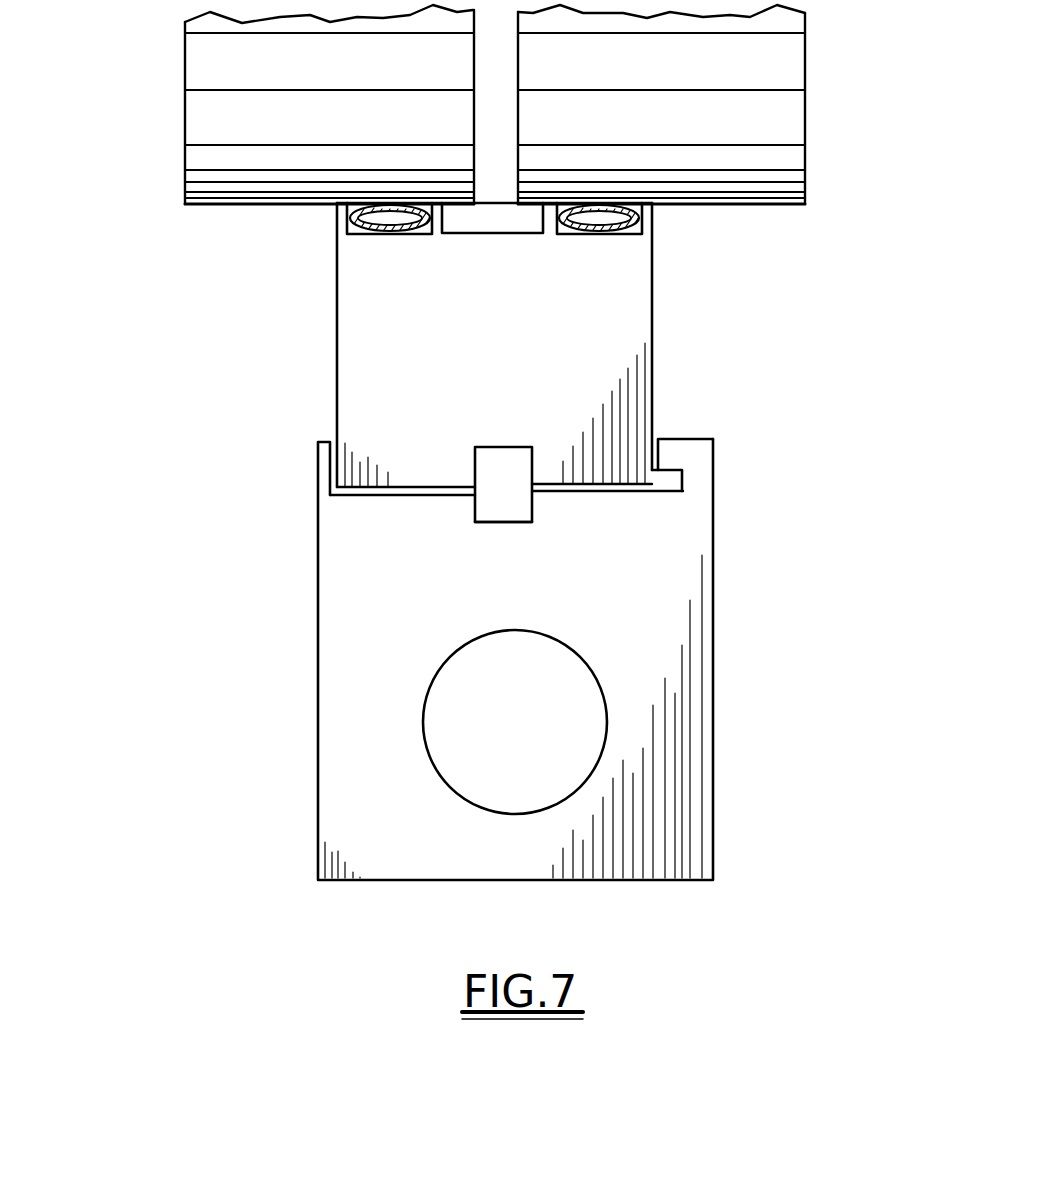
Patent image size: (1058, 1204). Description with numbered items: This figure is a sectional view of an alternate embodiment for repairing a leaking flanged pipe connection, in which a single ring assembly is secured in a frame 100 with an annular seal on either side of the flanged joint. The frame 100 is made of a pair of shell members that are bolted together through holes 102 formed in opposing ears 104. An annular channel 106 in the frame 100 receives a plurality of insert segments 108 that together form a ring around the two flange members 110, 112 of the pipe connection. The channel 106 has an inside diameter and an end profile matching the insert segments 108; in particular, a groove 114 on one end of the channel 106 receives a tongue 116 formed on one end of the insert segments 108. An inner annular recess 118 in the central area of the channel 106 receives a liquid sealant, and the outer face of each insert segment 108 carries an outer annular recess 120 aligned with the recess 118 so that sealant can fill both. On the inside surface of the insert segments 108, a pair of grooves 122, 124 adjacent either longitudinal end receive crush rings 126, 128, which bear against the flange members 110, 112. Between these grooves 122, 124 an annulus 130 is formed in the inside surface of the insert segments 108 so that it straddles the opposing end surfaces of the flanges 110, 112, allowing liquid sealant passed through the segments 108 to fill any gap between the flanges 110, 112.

The frame 100 is at (240, 656).
The holes 102 is at (489, 739).
The ears 104 is at (712, 722).
The annular channel 106 is at (653, 487).
The insert segments 108 is at (627, 323).
The flange member 110 is at (197, 126).
The flange member 112 is at (798, 112).
The groove 114 is at (683, 473).
The tongue 116 is at (663, 467).
The inner annular recess 118 is at (508, 517).
The outer annular recess 120 is at (494, 455).
The groove 122 is at (350, 238).
The groove 124 is at (640, 243).
The crush ring 126 is at (420, 235).
The crush ring 128 is at (650, 207).
The annulus 130 is at (495, 208).